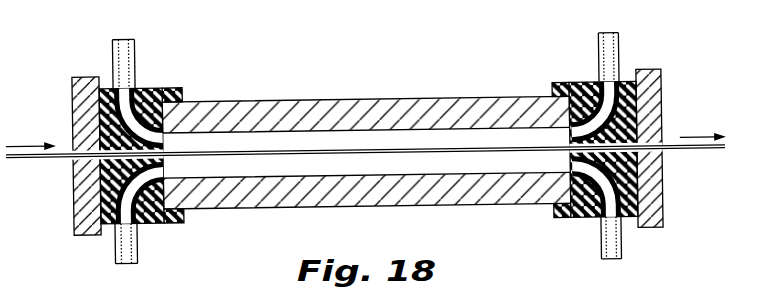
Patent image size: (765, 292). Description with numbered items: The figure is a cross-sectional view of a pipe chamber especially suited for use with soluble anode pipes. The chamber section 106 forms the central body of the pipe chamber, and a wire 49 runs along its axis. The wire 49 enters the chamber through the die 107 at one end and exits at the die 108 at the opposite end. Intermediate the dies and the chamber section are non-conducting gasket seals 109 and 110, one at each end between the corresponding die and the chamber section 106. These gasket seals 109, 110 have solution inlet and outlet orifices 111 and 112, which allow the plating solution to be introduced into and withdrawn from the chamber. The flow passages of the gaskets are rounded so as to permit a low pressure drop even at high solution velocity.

The wire 49 is at (32, 161).
The chamber section 106 is at (410, 99).
The die 107 is at (74, 236).
The die 108 is at (663, 211).
The non-conducting gasket seal 109 is at (178, 86).
The non-conducting gasket seal 110 is at (571, 82).
The solution inlet and outlet orifice 111 is at (158, 226).
The solution inlet and outlet orifice 112 is at (143, 86).